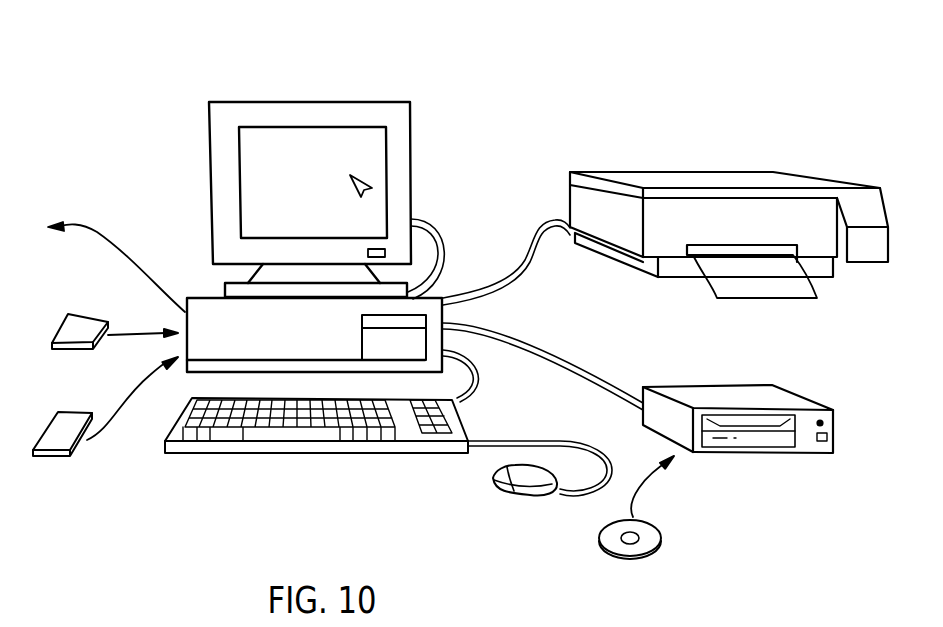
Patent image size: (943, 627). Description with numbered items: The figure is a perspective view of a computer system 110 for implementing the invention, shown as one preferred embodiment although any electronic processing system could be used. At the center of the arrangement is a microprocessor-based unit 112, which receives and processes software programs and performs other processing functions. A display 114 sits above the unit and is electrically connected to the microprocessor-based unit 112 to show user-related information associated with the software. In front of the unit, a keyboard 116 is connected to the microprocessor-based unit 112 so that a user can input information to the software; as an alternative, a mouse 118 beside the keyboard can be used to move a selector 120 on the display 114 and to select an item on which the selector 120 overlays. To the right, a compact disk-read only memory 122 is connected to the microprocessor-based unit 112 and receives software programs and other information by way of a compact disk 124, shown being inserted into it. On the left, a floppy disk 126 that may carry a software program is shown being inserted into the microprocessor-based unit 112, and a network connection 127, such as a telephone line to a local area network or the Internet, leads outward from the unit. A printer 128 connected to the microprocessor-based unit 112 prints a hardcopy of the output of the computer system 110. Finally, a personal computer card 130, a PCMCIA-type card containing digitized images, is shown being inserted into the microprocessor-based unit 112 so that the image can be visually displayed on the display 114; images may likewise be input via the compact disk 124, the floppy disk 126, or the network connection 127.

The computer system 110 is at (498, 123).
The microprocessor-based unit 112 is at (203, 297).
The display 114 is at (338, 100).
The keyboard 116 is at (248, 453).
The mouse 118 is at (518, 496).
The selector 120 is at (373, 186).
The compact disk-read only memory (CD-ROM) 122 is at (685, 385).
The compact disk 124 is at (662, 535).
The floppy disk 126 is at (83, 313).
The network connection 127 is at (97, 232).
The printer 128 is at (647, 172).
The personal computer card (PC card) 130 is at (75, 447).